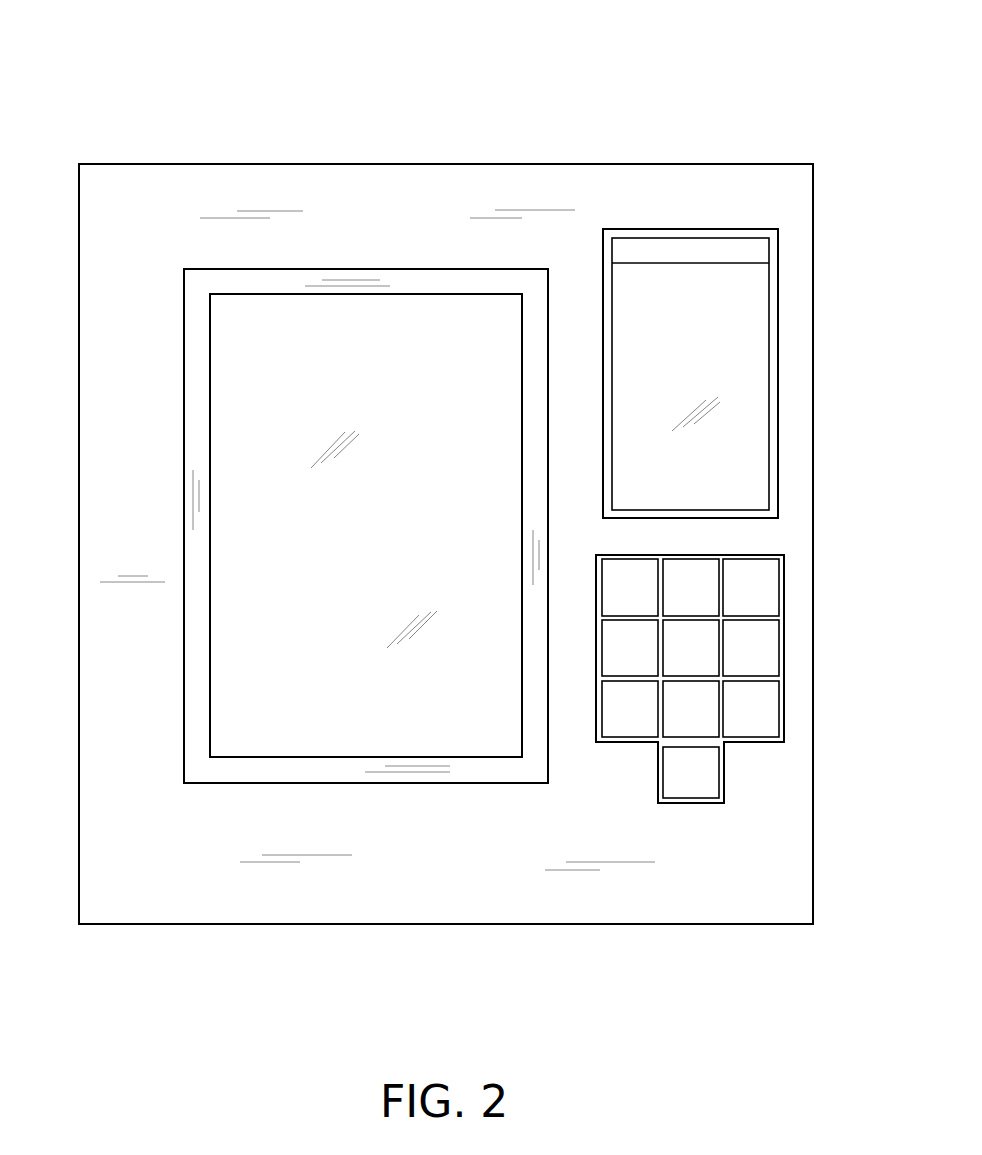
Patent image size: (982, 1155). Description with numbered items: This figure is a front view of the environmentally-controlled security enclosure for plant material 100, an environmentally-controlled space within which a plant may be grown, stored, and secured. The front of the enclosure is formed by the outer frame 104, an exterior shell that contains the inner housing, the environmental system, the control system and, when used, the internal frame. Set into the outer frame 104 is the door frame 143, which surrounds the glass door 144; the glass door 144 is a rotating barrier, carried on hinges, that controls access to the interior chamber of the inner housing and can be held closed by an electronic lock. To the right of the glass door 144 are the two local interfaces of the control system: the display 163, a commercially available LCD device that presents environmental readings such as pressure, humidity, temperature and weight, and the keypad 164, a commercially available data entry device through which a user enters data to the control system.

The environmentally-controlled security enclosure for plant material 100 is at (135, 73).
The outer frame 104 is at (687, 165).
The door frame 143 is at (315, 278).
The glass door 144 is at (387, 362).
The display 163 is at (778, 373).
The keypad 164 is at (784, 657).